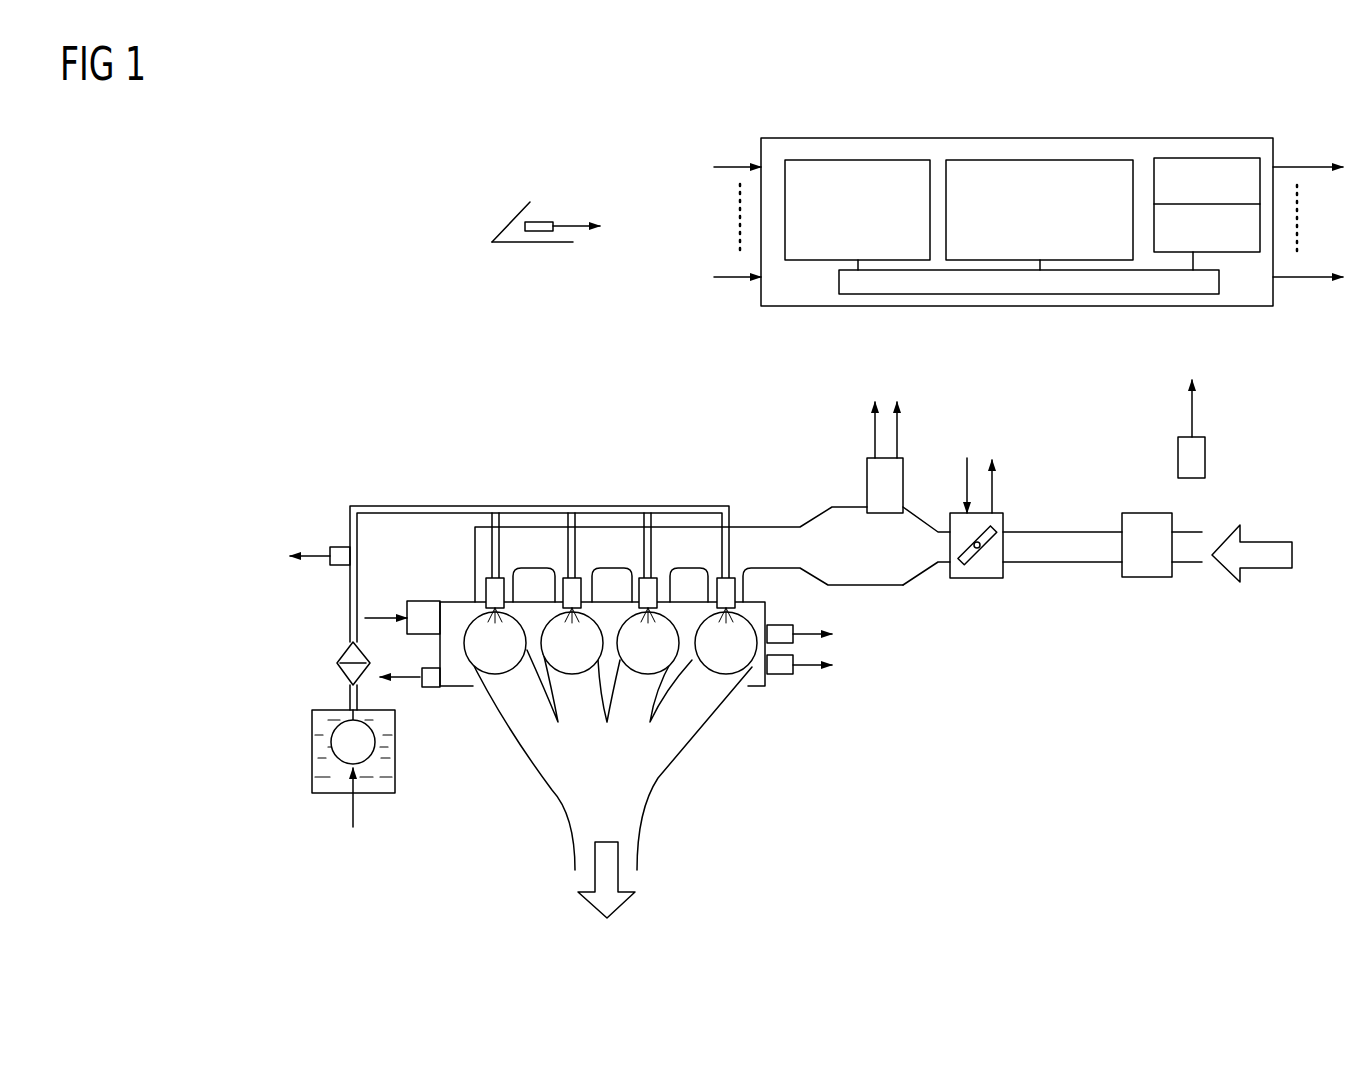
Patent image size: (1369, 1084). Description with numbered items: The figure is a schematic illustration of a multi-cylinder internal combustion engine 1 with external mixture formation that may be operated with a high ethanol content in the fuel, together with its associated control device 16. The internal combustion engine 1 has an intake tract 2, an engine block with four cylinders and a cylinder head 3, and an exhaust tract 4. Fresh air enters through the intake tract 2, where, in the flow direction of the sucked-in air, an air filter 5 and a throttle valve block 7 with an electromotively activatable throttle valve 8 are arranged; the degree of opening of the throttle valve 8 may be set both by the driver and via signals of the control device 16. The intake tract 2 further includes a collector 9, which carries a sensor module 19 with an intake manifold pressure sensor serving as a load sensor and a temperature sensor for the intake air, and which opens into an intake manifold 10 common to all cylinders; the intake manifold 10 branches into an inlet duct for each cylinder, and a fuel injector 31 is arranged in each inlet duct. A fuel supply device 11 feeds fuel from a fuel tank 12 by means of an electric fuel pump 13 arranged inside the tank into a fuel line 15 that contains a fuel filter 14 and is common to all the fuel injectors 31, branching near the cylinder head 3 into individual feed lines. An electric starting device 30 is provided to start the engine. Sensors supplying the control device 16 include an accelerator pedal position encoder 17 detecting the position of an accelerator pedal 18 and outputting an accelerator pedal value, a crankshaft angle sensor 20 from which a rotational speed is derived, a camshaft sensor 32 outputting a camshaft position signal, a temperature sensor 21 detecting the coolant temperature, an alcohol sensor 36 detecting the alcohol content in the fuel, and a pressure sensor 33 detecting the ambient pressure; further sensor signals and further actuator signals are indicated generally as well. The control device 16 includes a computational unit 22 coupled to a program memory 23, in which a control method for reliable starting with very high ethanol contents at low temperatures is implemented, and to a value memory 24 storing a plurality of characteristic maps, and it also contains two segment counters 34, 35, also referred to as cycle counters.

The internal combustion engine 1 is at (688, 755).
The intake tract 2 is at (1072, 595).
The cylinder head 3 is at (750, 687).
The exhaust tract 4 is at (628, 823).
The air filter 5 is at (1163, 567).
The throttle valve block 7 is at (992, 565).
The throttle valve 8 is at (970, 565).
The collector 9 is at (838, 533).
The intake manifold 10 is at (770, 533).
The fuel supply device 11 is at (320, 600).
The fuel tank 12 is at (320, 787).
The electric fuel pump 13 is at (363, 750).
The fuel filter 14 is at (340, 668).
The fuel line 15 is at (385, 506).
The control device 16 is at (963, 148).
The accelerator pedal position encoder 17 is at (537, 222).
The accelerator pedal 18 is at (513, 217).
The sensor module 19 is at (867, 462).
The crankshaft angle sensor 20 is at (430, 687).
The temperature sensor 21 is at (785, 675).
The computational unit 22 is at (1202, 283).
The program memory 23 is at (1011, 163).
The value memory 24 is at (793, 167).
The electric starting device 30 is at (423, 601).
The fuel injector 31 is at (488, 590).
The camshaft sensor 32 is at (788, 622).
The pressure sensor 33 is at (1207, 457).
The segment counter 34 is at (1162, 167).
The segment counter 35 is at (1250, 242).
The alcohol sensor 36 is at (340, 548).